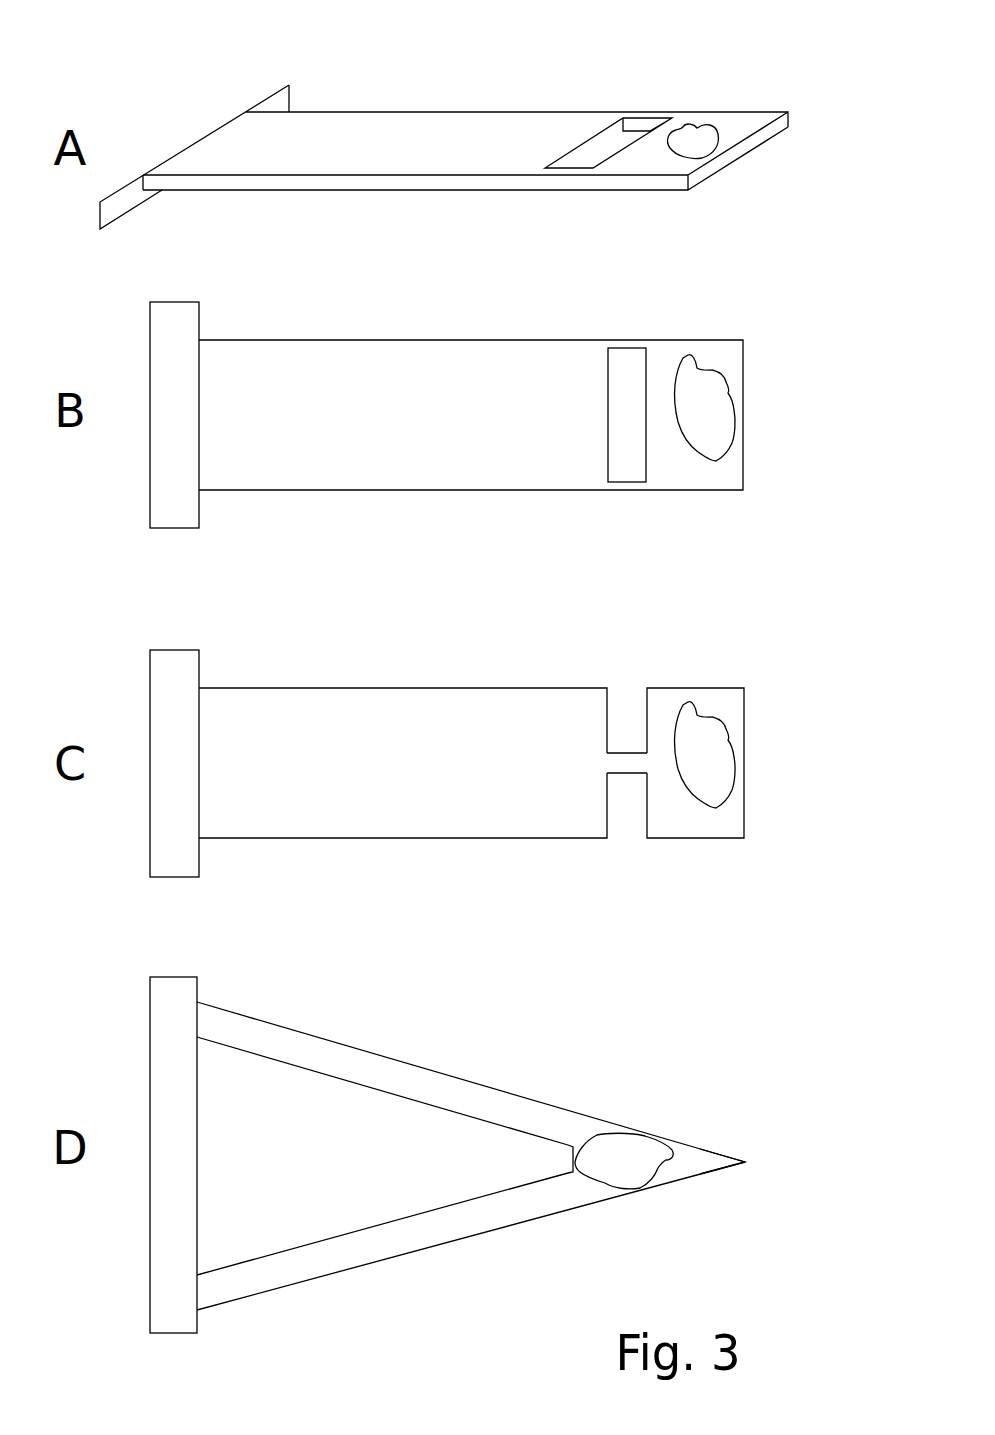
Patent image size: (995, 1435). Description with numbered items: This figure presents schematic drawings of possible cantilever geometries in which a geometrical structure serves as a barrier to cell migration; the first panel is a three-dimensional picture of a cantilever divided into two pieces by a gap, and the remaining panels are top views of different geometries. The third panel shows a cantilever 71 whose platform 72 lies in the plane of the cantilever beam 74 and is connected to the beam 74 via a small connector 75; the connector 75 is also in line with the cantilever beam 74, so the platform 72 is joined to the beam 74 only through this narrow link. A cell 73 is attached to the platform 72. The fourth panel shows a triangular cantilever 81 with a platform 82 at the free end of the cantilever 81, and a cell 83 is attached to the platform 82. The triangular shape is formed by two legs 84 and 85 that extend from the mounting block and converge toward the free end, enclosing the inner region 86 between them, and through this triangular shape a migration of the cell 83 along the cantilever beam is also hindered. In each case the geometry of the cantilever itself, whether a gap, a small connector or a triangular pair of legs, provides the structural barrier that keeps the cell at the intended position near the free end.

The cantilever 71 is at (455, 710).
The platform 72 is at (715, 708).
The cell 73 is at (700, 777).
The cantilever beam 74 is at (365, 722).
The connector 75 is at (632, 777).
The triangular cantilever 81 is at (390, 1067).
The platform 82 is at (693, 1162).
The cell 83 is at (617, 1153).
The leg 84 is at (298, 1063).
The leg 85 is at (398, 1232).
The recess between arms 86 is at (443, 1092).